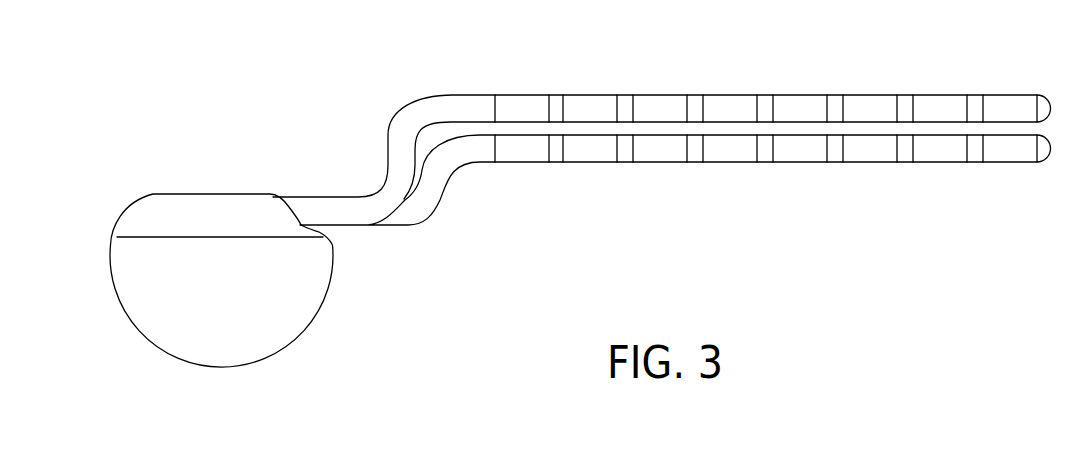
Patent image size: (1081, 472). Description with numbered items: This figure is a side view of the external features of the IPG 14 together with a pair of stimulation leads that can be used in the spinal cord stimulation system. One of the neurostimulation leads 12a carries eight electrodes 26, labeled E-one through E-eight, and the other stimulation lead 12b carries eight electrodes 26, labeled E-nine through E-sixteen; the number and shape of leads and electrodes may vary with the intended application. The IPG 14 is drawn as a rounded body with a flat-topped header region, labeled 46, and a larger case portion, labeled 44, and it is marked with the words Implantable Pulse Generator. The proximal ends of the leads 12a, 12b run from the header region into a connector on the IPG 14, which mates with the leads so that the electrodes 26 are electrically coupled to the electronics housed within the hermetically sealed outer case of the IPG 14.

The IPG 14 is at (228, 244).
The neurostimulation lead 12a is at (500, 82).
The stimulation lead 12b is at (521, 173).
The electrodes 26 is at (662, 95).
The outer case of IPG 44 is at (326, 282).
The connector (header) of IPG 46 is at (228, 200).